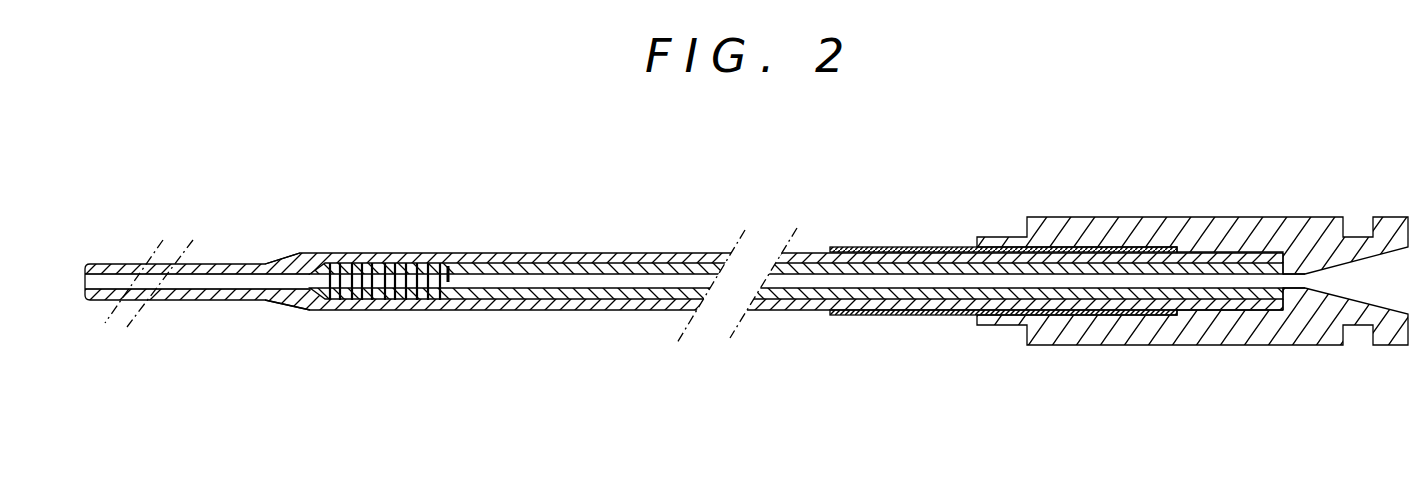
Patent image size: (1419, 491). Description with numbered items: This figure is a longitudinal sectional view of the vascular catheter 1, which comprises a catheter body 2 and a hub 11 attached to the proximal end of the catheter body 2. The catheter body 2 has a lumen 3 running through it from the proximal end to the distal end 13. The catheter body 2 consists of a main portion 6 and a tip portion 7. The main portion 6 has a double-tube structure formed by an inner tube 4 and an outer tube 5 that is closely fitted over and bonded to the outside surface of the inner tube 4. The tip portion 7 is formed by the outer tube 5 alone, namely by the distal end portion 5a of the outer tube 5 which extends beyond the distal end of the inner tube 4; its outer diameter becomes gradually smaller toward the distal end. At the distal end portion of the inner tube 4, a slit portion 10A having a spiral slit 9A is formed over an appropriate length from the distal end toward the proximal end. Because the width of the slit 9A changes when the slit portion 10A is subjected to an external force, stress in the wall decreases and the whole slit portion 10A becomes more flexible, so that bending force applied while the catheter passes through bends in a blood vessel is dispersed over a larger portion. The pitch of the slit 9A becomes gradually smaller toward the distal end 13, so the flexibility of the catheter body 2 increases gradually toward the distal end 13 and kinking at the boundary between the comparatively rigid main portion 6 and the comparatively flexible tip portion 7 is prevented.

The vascular catheter 1 is at (490, 343).
The catheter body 2 is at (653, 316).
The lumen 3 is at (282, 284).
The inner tube 4 is at (549, 306).
The outer tube 5 is at (227, 296).
The distal end portion of the outer tube 5a is at (247, 264).
The main portion 6 is at (307, 182).
The tip portion 7 is at (300, 182).
The spiral slit 9A is at (446, 272).
The slit portion 10A is at (447, 346).
The hub 11 is at (1168, 222).
The distal end 13 is at (83, 283).